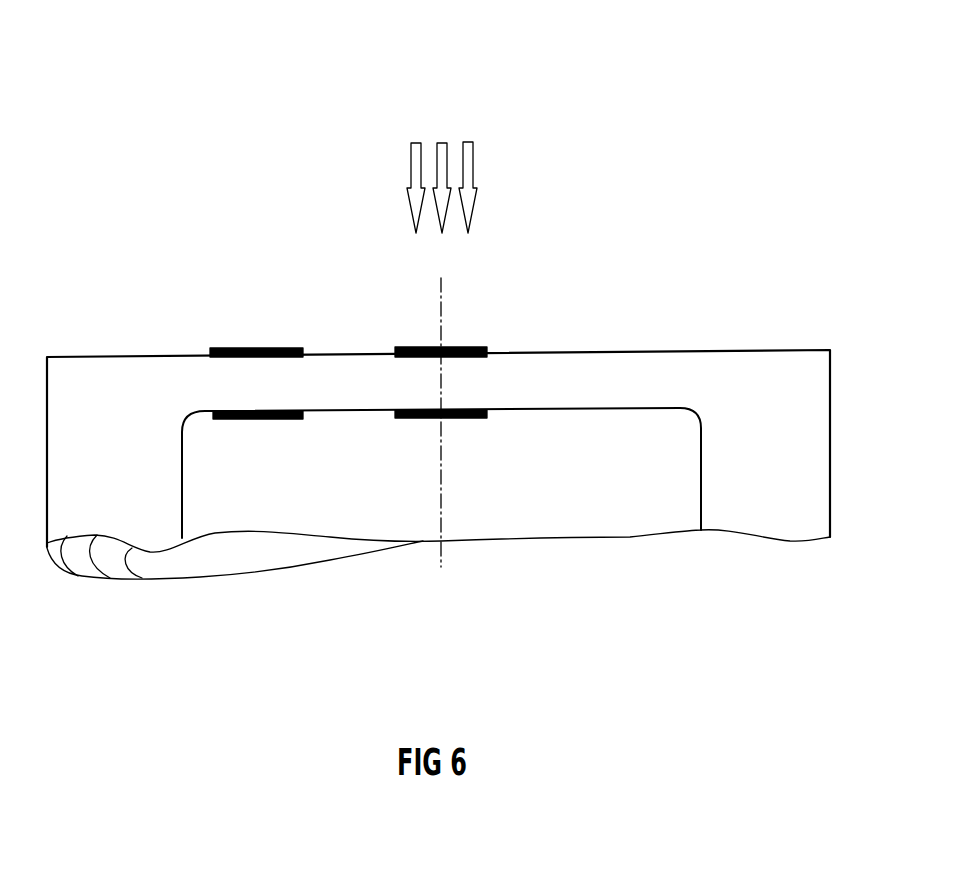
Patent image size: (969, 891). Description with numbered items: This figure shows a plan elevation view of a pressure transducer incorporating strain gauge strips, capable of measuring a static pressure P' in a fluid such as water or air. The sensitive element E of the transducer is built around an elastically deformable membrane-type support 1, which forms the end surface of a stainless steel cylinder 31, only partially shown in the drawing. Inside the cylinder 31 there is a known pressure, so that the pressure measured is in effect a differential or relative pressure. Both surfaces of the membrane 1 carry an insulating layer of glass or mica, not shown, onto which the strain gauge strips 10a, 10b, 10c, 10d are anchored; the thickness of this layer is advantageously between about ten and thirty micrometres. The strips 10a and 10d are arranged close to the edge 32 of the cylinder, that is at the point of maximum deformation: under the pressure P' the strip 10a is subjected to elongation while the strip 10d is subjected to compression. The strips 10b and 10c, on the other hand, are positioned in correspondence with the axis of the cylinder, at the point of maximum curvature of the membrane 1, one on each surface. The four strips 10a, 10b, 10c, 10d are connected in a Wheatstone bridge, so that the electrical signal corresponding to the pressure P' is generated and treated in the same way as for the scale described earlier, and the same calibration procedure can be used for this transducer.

The membrane-type support 1 is at (622, 385).
The strain gauge strip 10a is at (265, 346).
The strain gauge strip 10b is at (466, 346).
The strain gauge strip 10c is at (482, 418).
The strain gauge strip 10d is at (265, 419).
The stainless steel cylinder 31 is at (620, 205).
The edge of the cylinder 32 is at (97, 370).
The static pressure P' is at (467, 146).
The sensitive element E is at (362, 512).